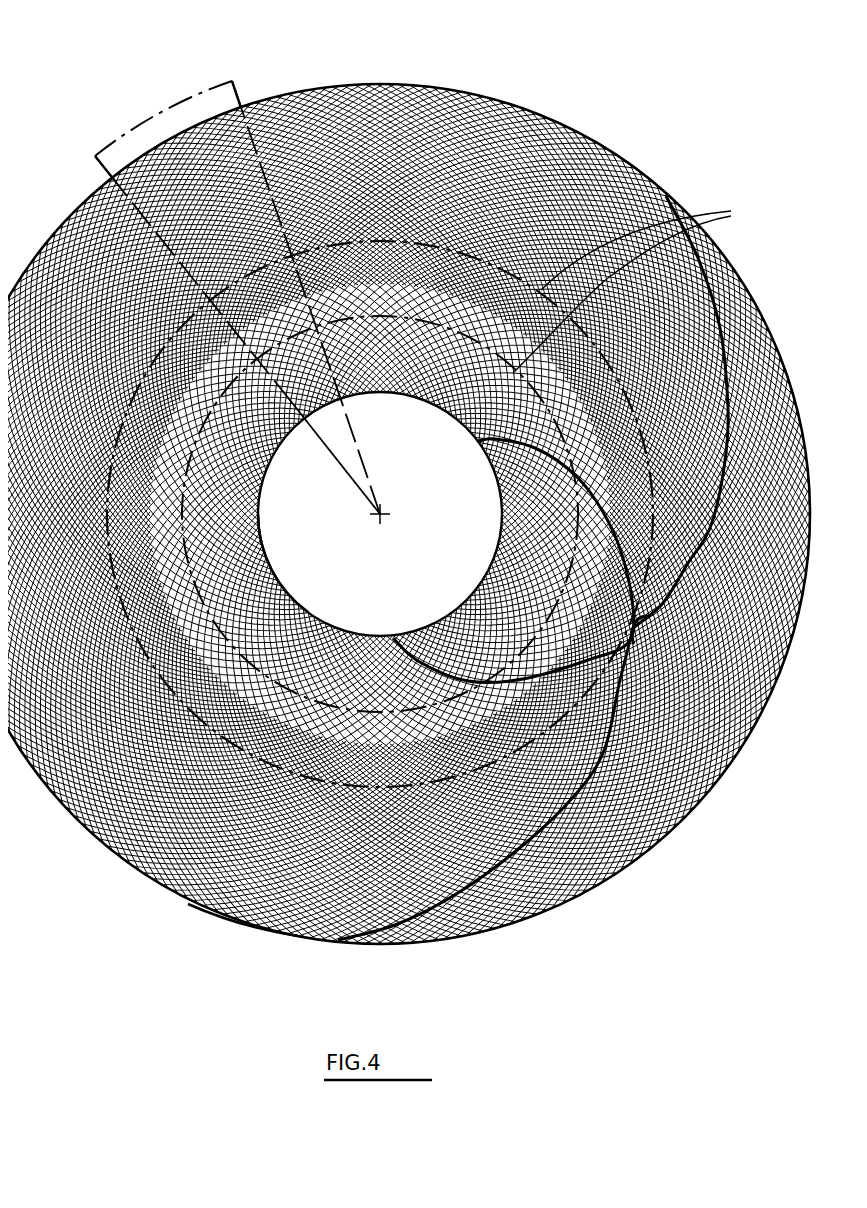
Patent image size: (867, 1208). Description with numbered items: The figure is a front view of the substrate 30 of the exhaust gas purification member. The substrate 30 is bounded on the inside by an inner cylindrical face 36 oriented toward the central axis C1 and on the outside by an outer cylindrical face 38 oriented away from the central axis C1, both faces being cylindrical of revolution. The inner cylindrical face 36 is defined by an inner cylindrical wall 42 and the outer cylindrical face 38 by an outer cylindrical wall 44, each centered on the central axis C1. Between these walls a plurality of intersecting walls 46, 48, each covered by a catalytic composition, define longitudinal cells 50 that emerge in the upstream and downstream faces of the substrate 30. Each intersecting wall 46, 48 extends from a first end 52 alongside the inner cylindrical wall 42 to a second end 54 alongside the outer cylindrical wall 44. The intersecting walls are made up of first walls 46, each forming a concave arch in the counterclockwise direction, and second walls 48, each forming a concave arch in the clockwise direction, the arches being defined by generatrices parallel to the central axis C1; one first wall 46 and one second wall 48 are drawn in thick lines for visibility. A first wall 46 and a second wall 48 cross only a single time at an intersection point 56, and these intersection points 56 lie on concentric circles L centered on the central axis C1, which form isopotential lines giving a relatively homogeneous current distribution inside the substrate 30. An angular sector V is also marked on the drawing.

The substrate 30 is at (600, 100).
The inner cylindrical face 36 is at (348, 626).
The outer cylindrical face 38 is at (102, 840).
The inner cylindrical wall 42 is at (270, 546).
The outer cylindrical wall 44 is at (230, 913).
The first wall 46 is at (720, 380).
The second wall 48 is at (567, 787).
The longitudinal cell 50 is at (370, 110).
The first end 52 is at (470, 433).
The second end 54 is at (658, 188).
The intersection point 56 is at (627, 617).
The central axis C1 is at (376, 503).
The concentric circle L is at (630, 286).
The angular sector V is at (96, 163).